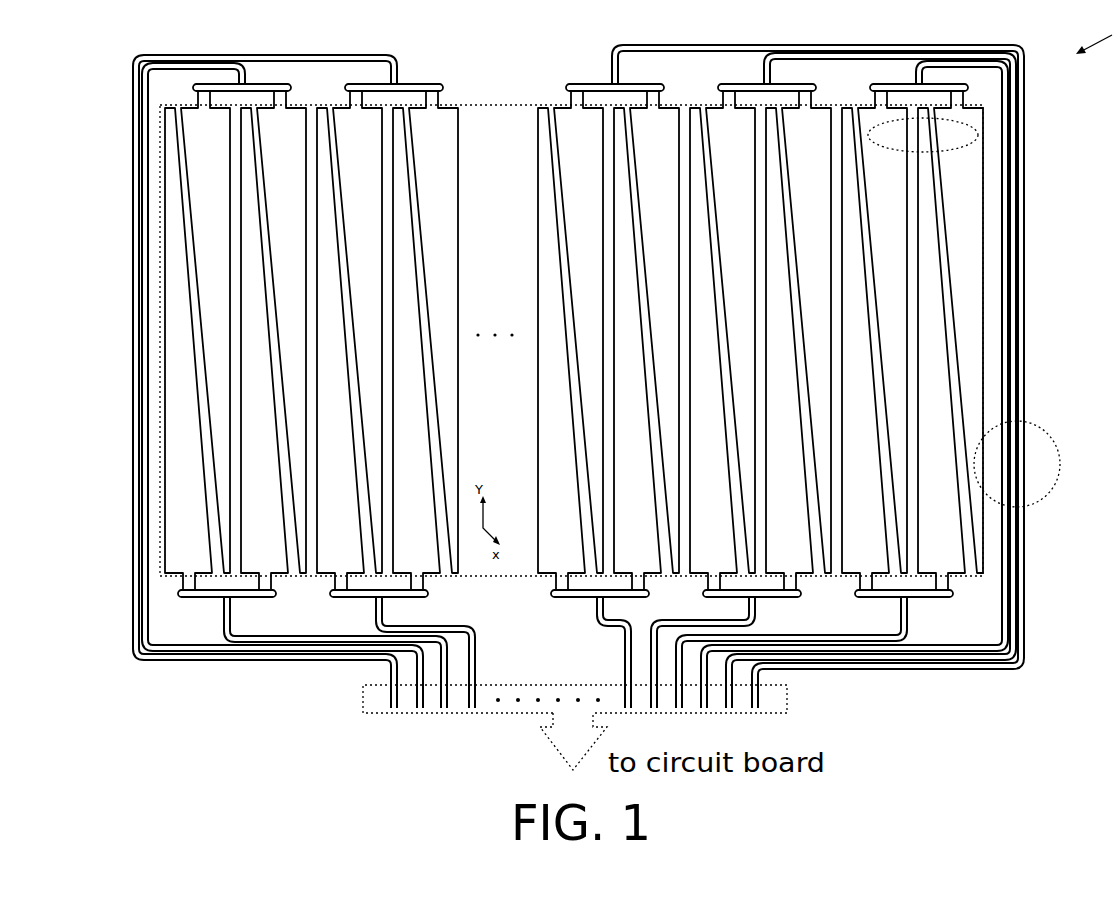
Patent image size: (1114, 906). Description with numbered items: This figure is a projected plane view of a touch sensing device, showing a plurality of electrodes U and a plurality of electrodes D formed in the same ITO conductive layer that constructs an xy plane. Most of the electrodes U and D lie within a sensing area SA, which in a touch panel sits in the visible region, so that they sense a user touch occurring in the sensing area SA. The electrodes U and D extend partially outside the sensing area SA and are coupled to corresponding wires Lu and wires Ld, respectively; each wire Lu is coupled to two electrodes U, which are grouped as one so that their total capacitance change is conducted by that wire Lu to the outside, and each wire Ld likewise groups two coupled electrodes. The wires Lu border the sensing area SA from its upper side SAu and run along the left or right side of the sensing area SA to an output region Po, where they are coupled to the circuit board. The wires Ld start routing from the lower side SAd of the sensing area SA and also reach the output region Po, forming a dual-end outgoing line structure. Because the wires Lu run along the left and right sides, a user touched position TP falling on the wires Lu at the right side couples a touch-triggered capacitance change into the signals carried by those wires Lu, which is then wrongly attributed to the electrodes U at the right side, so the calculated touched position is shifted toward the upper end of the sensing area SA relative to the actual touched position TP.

The wires Lu is at (398, 55).
The wires Ld is at (235, 611).
The upper side SAu is at (992, 104).
The lower side SAd is at (992, 579).
The electrodes U is at (442, 143).
The electrodes D is at (427, 561).
The sensing area SA is at (511, 576).
The touched position TP is at (957, 145).
The output region Po is at (789, 697).